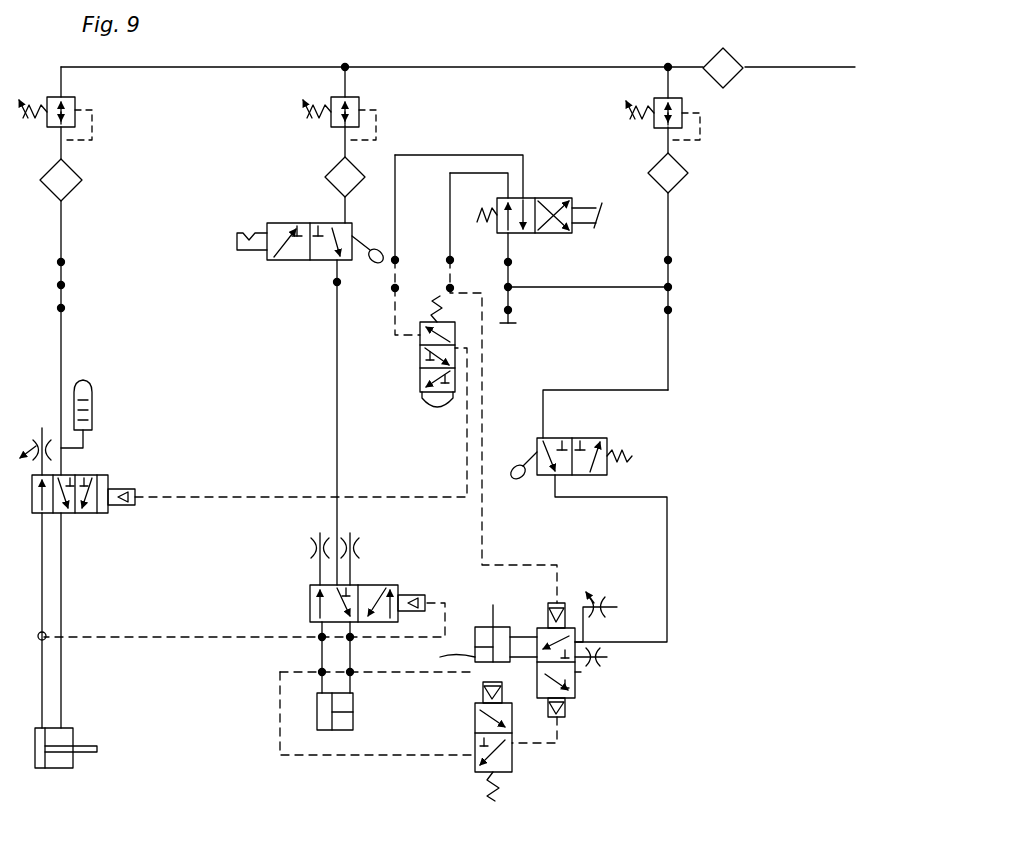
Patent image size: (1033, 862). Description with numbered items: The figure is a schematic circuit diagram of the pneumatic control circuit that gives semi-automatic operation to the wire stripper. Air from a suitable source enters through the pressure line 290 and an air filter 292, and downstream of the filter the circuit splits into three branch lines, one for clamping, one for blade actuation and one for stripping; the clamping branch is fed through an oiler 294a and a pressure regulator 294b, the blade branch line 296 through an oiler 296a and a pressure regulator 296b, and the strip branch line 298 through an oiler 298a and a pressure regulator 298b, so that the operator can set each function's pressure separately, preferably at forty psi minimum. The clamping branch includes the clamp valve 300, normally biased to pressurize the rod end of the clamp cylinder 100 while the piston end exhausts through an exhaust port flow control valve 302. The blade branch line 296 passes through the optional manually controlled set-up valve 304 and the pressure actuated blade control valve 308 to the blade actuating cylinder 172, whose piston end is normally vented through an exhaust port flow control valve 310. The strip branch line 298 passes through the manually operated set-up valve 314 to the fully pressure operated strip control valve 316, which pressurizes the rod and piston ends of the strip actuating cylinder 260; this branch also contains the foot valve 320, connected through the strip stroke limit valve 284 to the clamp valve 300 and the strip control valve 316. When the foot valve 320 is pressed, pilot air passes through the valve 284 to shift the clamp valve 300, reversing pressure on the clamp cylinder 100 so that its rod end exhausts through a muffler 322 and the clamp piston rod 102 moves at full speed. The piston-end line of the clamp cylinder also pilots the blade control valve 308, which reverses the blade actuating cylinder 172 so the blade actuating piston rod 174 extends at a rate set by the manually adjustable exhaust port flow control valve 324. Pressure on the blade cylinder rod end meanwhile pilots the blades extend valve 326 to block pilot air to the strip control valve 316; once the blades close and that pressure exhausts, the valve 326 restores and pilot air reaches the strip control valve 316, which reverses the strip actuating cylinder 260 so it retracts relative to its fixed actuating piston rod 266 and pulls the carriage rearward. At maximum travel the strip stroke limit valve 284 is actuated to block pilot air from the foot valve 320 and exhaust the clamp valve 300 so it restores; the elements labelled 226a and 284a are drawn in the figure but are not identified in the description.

The clamp cylinder 100 is at (60, 768).
The clamp piston rod 102 is at (80, 754).
The blade actuating cylinder 172 is at (313, 707).
The blade actuating piston rod 174 is at (362, 700).
The control block 226a is at (490, 625).
The strip actuating cylinder 260 is at (528, 605).
The actuating piston rod 266 is at (432, 658).
The strip stroke limit valve 284 is at (420, 360).
The valve actuator 284a is at (430, 406).
The pressure line 290 is at (815, 67).
The air filter 292 is at (730, 50).
The oiler 294a is at (82, 180).
The pressure regulator 294b is at (75, 99).
The pressure branch line 296 is at (343, 206).
The oiler 296a is at (335, 168).
The pressure regulator 296b is at (359, 99).
The pressure branch line 298 is at (671, 250).
The oiler 298a is at (689, 180).
The pressure regulator 298b is at (683, 100).
The clamp valve 300 is at (85, 515).
The exhaust port flow control valve 302 is at (30, 440).
The set-up valve 304 is at (278, 265).
The blade control valve 308 is at (310, 592).
The exhaust port flow control valve 310 is at (305, 548).
The set-up valve 314 is at (592, 437).
The strip control valve 316 is at (585, 685).
The foot valve 320 is at (548, 238).
The muffler 322 is at (93, 388).
The exhaust port flow control valve 324 is at (360, 545).
The blades extend valve 326 is at (475, 745).